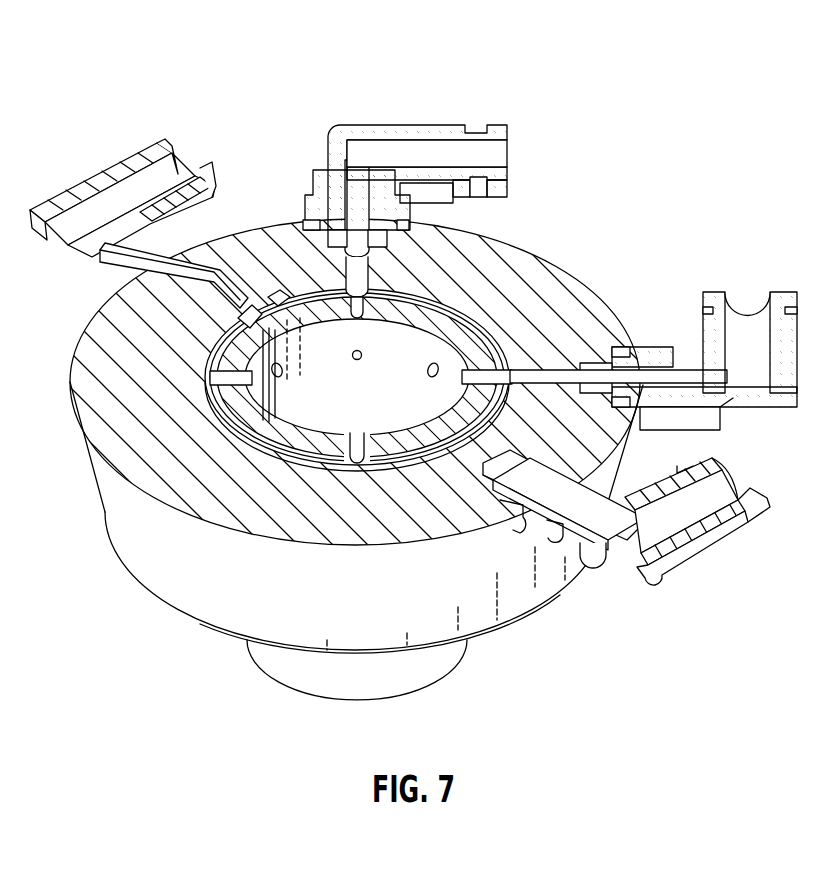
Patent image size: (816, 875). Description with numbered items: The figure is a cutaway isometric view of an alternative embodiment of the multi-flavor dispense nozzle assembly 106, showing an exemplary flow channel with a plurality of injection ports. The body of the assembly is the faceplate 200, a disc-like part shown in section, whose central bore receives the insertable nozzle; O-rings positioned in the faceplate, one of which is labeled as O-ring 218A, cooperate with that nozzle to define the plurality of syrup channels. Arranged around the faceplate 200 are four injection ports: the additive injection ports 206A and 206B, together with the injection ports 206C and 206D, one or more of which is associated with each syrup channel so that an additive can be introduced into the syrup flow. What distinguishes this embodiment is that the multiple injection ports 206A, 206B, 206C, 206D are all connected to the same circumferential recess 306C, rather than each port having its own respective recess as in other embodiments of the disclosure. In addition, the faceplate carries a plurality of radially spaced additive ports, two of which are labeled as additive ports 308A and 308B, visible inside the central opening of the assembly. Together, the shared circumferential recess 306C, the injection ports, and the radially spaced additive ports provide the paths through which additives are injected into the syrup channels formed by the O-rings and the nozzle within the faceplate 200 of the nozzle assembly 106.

The nozzle assembly 106 is at (126, 44).
The faceplate 200 is at (613, 332).
The O-ring 218A is at (522, 318).
The additive injection port 206A is at (612, 488).
The additive injection port 206B is at (247, 307).
The injection port 206C is at (366, 280).
The injection port 206D is at (586, 290).
The circumferential recess 306C is at (264, 228).
The additive port 308A is at (355, 355).
The additive port 308B is at (363, 447).